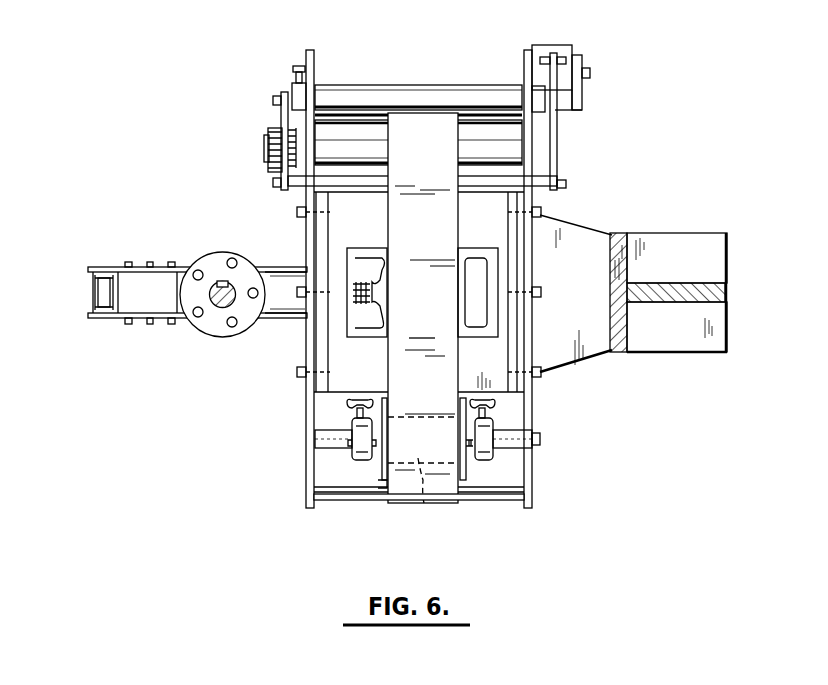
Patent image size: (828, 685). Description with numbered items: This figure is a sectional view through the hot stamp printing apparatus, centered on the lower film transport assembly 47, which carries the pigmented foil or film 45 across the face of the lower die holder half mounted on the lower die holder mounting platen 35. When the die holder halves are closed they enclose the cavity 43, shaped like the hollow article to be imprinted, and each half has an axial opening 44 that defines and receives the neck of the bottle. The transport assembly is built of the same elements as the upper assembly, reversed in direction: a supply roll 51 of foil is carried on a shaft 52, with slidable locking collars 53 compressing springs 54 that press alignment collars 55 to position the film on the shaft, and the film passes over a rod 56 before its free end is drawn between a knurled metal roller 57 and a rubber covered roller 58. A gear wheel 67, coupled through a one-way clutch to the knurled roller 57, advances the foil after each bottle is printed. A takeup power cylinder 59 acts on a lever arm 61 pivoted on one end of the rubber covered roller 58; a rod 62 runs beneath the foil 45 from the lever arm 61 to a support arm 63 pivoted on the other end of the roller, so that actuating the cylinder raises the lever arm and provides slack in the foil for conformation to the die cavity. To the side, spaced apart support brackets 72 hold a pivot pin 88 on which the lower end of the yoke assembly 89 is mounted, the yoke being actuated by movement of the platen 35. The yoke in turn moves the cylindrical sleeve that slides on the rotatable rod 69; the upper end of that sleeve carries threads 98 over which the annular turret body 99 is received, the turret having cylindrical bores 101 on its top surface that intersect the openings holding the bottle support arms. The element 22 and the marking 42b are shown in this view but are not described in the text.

The hopper chute 22 is at (678, 357).
The lower die holder mounting platen 35 is at (320, 240).
The solenoid valve 42b is at (366, 262).
The cavity 43 is at (468, 320).
The axial opening 44 is at (352, 300).
The pigmented foil or film 45 is at (423, 308).
The lower film transport assembly 47 is at (293, 423).
The supply roll 51 is at (425, 505).
The shaft 52 is at (322, 448).
The slidable locking collars 53 is at (362, 460).
The springs 54 is at (375, 465).
The alignment collars 55 is at (382, 490).
The rod 56 is at (510, 500).
The knurled metal roller 57 is at (503, 140).
The rubber covered roller 58 is at (347, 95).
The takeup power cylinder 59 is at (552, 47).
The lever arm 61 is at (551, 120).
The rod 62 is at (483, 188).
The support arm 63 is at (278, 162).
The gear wheel 67 is at (278, 125).
The rotatable rod 69 is at (222, 282).
The support brackets 72 is at (280, 266).
The pivot pin 88 is at (98, 292).
The yoke assembly 89 is at (146, 262).
The threads 98 is at (237, 300).
The annular turret body 99 is at (207, 322).
The cylindrical bores 101 is at (232, 258).